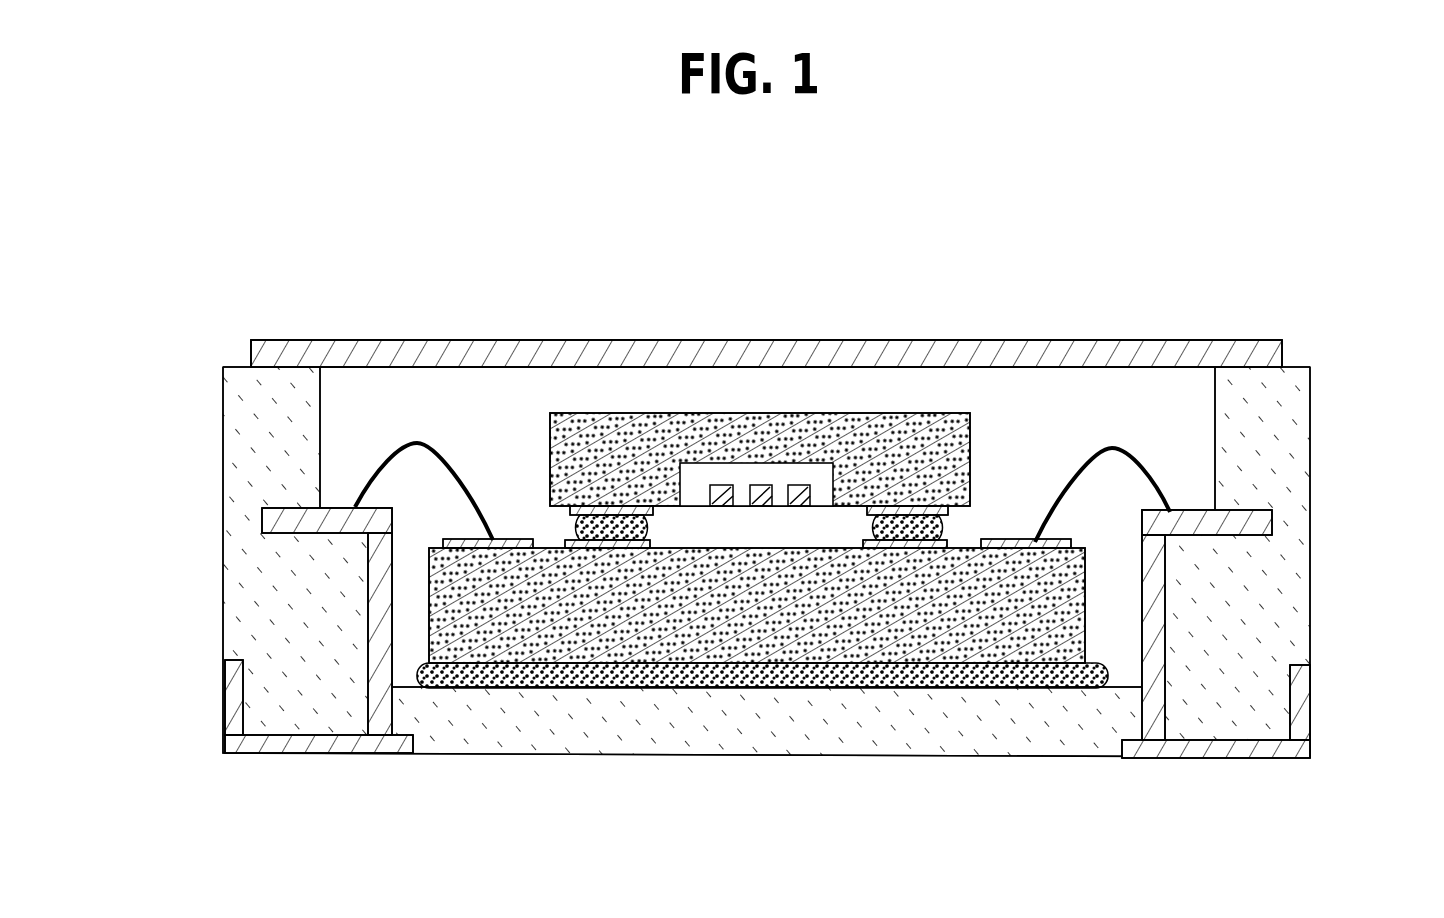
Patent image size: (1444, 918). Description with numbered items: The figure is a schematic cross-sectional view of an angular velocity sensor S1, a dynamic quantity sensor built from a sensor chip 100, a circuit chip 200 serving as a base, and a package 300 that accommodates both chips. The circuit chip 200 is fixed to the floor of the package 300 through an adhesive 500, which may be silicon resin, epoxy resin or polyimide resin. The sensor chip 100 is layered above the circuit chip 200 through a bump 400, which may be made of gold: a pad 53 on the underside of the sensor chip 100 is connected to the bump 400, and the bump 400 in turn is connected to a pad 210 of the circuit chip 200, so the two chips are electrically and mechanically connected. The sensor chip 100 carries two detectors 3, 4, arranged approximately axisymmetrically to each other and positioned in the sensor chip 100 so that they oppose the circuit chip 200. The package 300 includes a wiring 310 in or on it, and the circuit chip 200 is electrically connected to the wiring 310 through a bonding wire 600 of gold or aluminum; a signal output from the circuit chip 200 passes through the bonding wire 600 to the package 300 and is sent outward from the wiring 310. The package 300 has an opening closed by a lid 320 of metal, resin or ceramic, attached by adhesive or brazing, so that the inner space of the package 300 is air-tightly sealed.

The angular velocity sensor S1 is at (1278, 297).
The sensor chip 100 is at (877, 430).
The circuit chip 200 is at (832, 627).
The pad 210 is at (460, 552).
The package 300 is at (248, 594).
The wiring 310 is at (1247, 524).
The lid 320 is at (568, 340).
The bump 400 is at (573, 531).
The adhesive 500 is at (712, 686).
The pad 53 is at (570, 510).
The bonding wire 600 is at (385, 457).
The detector 3 is at (756, 382).
The detector 4 is at (763, 497).